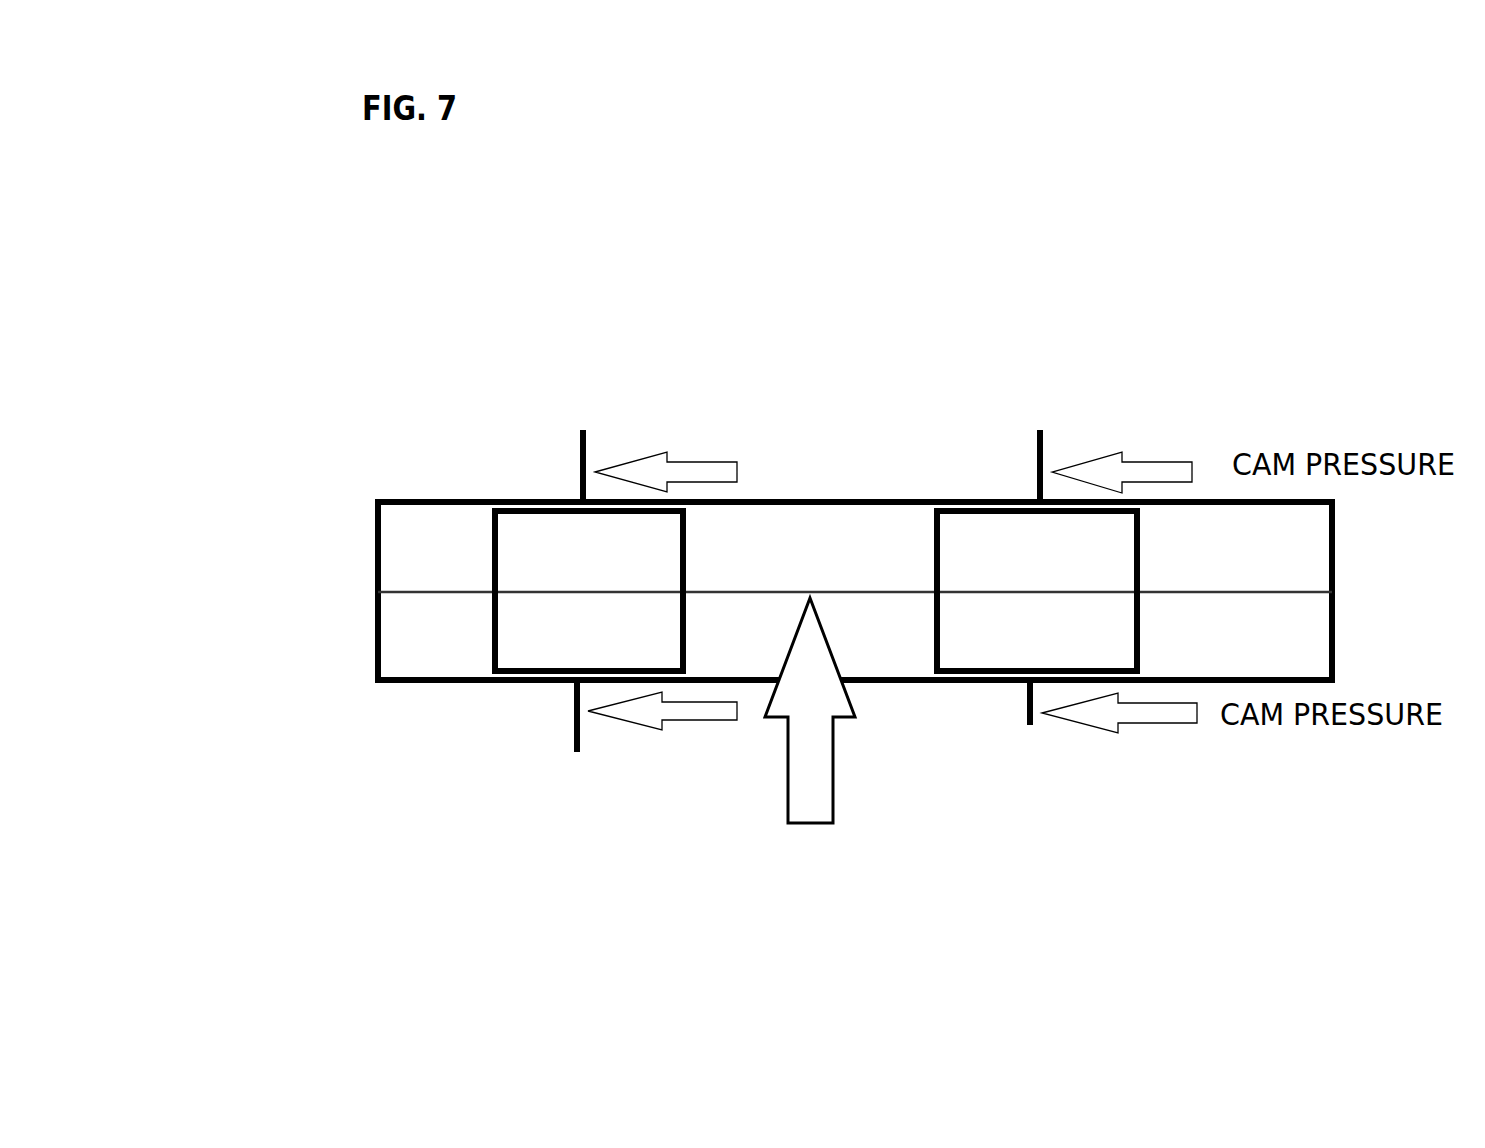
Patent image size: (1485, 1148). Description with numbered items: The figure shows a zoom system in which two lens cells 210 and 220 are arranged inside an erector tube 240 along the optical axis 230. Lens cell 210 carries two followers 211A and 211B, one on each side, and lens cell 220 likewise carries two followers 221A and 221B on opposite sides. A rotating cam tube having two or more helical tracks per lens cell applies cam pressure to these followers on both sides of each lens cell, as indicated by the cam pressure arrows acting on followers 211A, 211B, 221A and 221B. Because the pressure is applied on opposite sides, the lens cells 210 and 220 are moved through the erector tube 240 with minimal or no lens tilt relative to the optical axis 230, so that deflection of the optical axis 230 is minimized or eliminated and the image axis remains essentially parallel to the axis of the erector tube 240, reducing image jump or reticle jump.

The lens cell 210 is at (530, 548).
The follower 211A is at (585, 452).
The follower 211B is at (577, 722).
The lens cell 220 is at (987, 562).
The follower 221A is at (1041, 453).
The follower 221B is at (1031, 725).
The optical axis 230 is at (372, 592).
The erector tube 240 is at (375, 532).